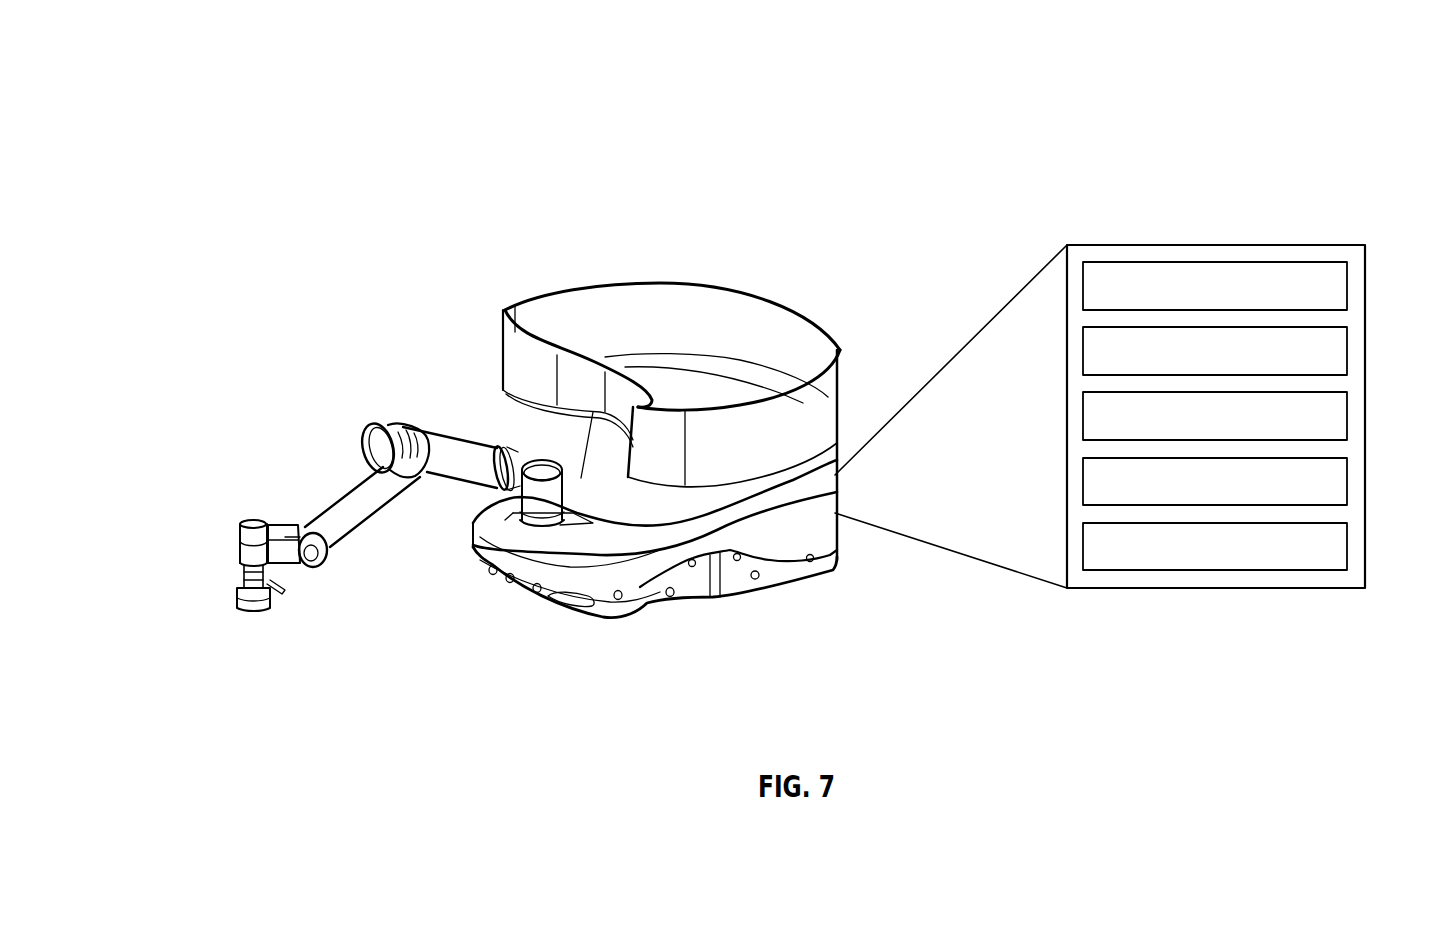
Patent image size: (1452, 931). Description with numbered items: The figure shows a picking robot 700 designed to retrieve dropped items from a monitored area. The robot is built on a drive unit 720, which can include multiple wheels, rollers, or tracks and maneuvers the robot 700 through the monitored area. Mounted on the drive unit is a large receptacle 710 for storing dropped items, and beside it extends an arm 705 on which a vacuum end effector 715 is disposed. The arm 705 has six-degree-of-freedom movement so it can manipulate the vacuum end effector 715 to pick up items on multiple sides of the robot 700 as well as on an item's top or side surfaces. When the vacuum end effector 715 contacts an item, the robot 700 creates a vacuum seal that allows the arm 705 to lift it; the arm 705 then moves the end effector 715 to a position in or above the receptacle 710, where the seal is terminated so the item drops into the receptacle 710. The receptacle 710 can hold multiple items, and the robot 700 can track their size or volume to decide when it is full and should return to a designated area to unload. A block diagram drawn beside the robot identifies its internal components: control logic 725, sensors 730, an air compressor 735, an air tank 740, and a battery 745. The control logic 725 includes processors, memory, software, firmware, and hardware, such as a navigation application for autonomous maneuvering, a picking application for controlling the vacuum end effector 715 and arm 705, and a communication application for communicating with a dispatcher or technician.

The picking robot 700 is at (265, 100).
The arm 705 is at (385, 420).
The receptacle 710 is at (647, 283).
The vacuum end effector 715 is at (250, 612).
The drive unit 720 is at (752, 592).
The control logic 725 is at (1347, 287).
The sensors 730 is at (1347, 352).
The air compressor 735 is at (1347, 417).
The air tank 740 is at (1347, 483).
The battery 745 is at (1347, 548).